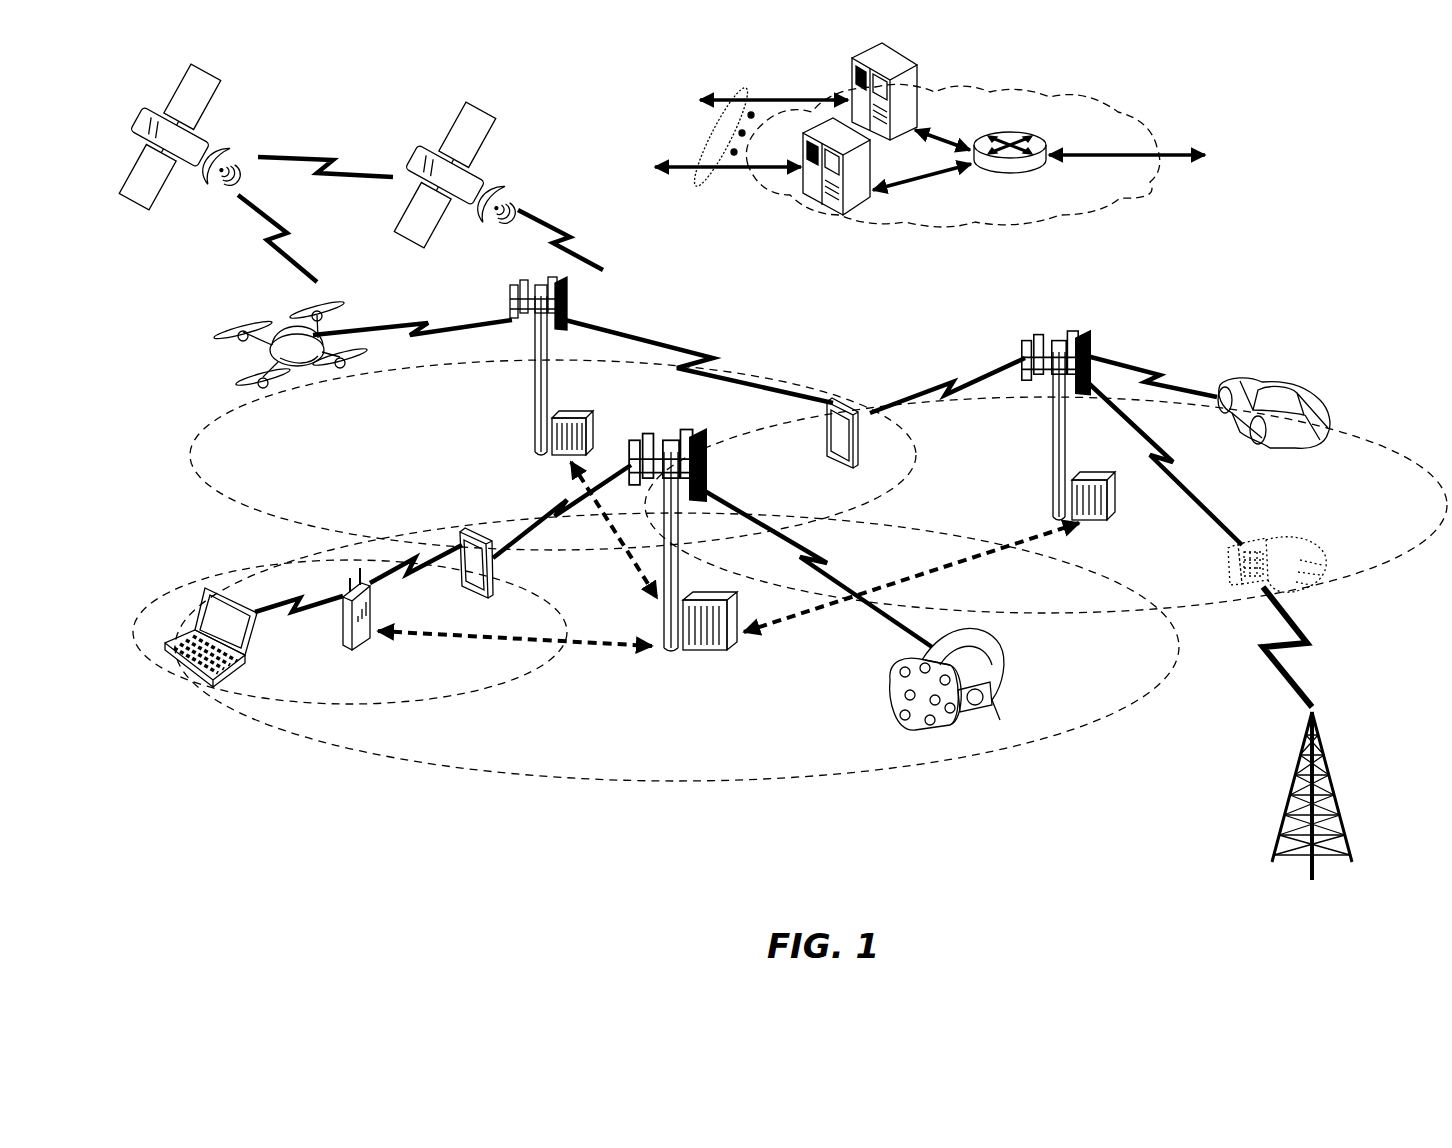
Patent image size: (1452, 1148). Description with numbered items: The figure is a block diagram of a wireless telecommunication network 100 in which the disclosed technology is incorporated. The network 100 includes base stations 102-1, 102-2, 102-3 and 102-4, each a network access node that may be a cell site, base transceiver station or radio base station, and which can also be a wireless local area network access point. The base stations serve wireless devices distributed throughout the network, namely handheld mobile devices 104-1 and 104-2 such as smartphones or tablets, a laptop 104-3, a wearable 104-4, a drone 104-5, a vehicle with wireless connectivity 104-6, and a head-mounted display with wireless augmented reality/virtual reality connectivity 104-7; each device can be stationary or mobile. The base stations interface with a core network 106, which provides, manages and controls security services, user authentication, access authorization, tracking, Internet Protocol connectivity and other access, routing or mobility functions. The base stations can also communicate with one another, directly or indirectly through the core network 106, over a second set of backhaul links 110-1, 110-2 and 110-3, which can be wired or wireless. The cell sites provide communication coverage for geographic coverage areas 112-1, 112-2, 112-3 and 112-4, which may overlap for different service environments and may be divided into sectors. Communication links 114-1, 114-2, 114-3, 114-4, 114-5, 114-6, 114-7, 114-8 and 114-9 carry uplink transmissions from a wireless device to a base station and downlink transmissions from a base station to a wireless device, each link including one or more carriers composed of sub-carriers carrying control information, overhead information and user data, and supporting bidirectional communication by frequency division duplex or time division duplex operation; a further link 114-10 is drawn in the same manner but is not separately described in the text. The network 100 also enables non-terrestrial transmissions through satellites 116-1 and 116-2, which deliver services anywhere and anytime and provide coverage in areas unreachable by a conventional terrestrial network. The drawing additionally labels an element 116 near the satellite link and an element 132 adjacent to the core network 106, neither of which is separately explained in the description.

The wireless telecommunication network 100 is at (1344, 145).
The base station 102-1 is at (665, 655).
The base station 102-2 is at (533, 405).
The base station 102-3 is at (1052, 440).
The base station 102-4 is at (340, 643).
The handheld mobile device 104-1 is at (497, 578).
The handheld mobile device 104-2 is at (825, 438).
The laptop 104-3 is at (190, 673).
The wearable 104-4 is at (1255, 546).
The drone 104-5 is at (300, 372).
The vehicle with wireless connectivity 104-6 is at (1293, 390).
The head-mounted display 104-7 is at (1000, 672).
The core network 106 is at (1045, 228).
The backhaul link 110-1 is at (412, 640).
The backhaul link 110-2 is at (985, 563).
The backhaul link 110-3 is at (630, 568).
The geographic coverage area 112-1 is at (597, 781).
The geographic coverage area 112-2 is at (480, 702).
The geographic coverage area 112-3 is at (258, 512).
The geographic coverage area 112-4 is at (1345, 437).
The communication link 114-1 is at (835, 565).
The communication link 114-2 is at (555, 505).
The communication link 114-3 is at (265, 615).
The communication link 114-4 is at (410, 577).
The communication link 114-5 is at (410, 322).
The communication link 114-6 is at (948, 378).
The communication link 114-7 is at (705, 356).
The communication link 114-8 is at (1183, 470).
The communication link 114-9 is at (1150, 370).
The wireless link 114-10 is at (1292, 648).
The broadcast tower 116 is at (1325, 776).
The satellite 116-1 is at (236, 149).
The satellite 116-2 is at (505, 185).
The network interface 132 is at (712, 178).